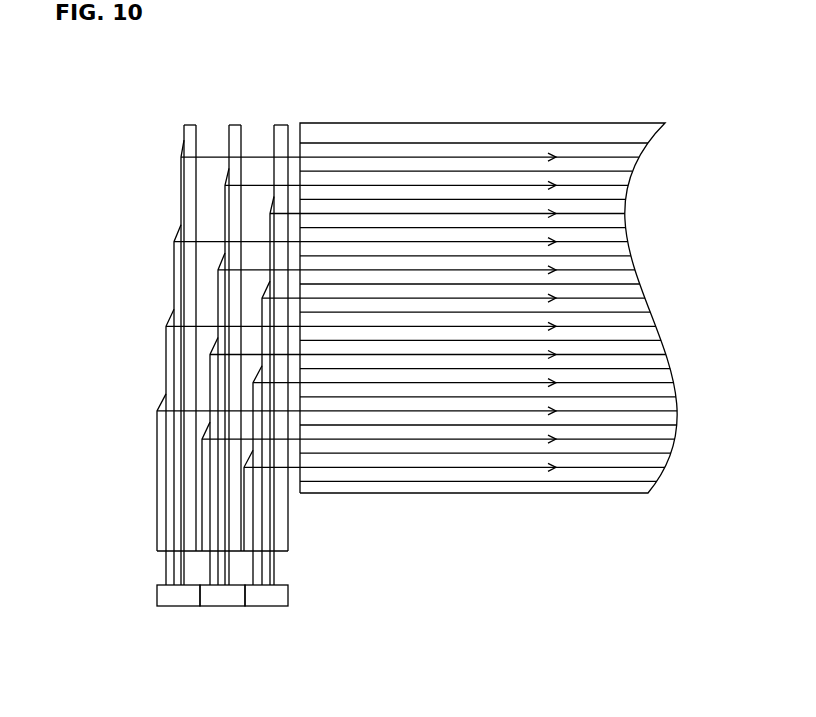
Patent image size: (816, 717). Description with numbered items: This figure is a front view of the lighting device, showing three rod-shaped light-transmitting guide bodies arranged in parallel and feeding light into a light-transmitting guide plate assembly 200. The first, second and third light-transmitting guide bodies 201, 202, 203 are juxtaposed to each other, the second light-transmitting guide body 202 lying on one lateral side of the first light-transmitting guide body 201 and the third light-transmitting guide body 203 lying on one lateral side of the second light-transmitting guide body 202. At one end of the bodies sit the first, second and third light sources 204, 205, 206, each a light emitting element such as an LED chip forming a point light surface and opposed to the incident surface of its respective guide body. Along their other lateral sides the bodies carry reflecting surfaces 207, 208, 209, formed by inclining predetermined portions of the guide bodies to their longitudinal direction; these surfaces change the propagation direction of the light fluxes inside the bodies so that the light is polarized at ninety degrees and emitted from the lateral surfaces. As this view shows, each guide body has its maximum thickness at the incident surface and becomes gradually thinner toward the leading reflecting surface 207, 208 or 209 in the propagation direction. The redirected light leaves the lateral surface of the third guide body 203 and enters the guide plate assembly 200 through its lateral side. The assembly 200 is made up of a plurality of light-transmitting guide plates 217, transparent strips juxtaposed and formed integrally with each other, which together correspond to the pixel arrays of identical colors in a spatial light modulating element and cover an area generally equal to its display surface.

The light-transmitting guide plate assembly 200 is at (592, 514).
The first light-transmitting guide body 201 is at (187, 124).
The second light-transmitting guide body 202 is at (234, 124).
The third light-transmitting guide body 203 is at (280, 124).
The first light source 204 is at (181, 606).
The second light source 205 is at (225, 606).
The third light source 206 is at (275, 606).
The reflecting surfaces 207 is at (181, 152).
The reflecting surfaces 208 is at (225, 181).
The reflecting surfaces 209 is at (270, 209).
The light-transmitting guide plates 217 is at (350, 147).